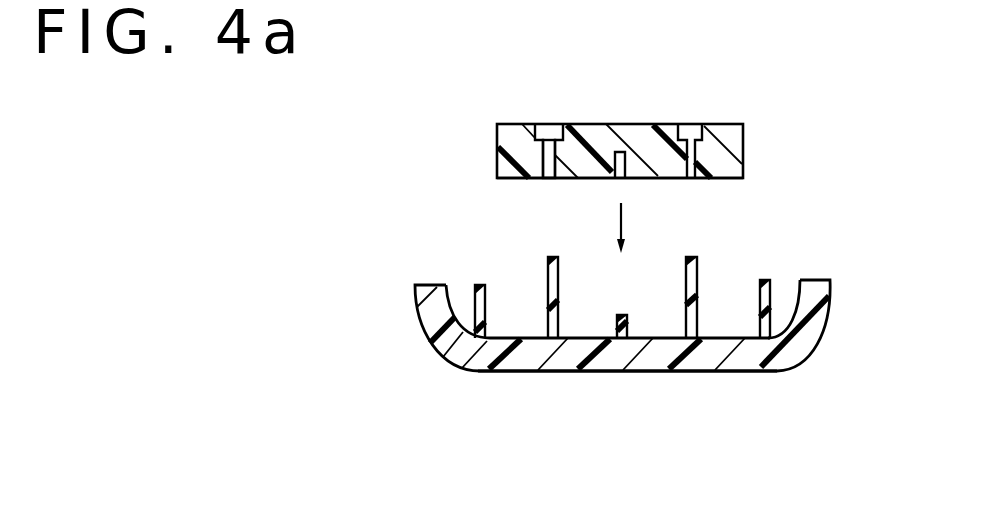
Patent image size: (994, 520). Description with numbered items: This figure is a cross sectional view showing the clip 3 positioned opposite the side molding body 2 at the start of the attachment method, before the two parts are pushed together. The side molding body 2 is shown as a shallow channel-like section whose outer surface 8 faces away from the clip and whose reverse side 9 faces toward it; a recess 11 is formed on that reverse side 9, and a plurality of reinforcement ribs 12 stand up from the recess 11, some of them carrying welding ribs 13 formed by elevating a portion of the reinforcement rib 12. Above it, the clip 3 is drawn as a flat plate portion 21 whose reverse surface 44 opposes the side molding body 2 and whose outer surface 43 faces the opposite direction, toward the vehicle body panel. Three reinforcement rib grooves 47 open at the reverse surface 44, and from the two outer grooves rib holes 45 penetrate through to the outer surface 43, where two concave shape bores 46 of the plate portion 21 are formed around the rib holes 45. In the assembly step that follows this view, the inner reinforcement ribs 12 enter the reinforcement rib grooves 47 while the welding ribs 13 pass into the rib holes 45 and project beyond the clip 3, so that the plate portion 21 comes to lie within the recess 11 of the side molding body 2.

The side molding body 2 is at (424, 386).
The clip 3 is at (490, 106).
The outer surface 8 is at (763, 384).
The reverse side 9 is at (736, 278).
The recess 11 is at (514, 337).
The reinforcement ribs 12 is at (479, 318).
The welding ribs 13 is at (543, 261).
The plate portion 21 is at (727, 128).
The outer surface 43 is at (689, 110).
The reverse surface 44 is at (734, 191).
The rib holes 45 is at (551, 147).
The concave shape bores 46 is at (546, 142).
The reinforcement rib grooves 47 is at (623, 160).